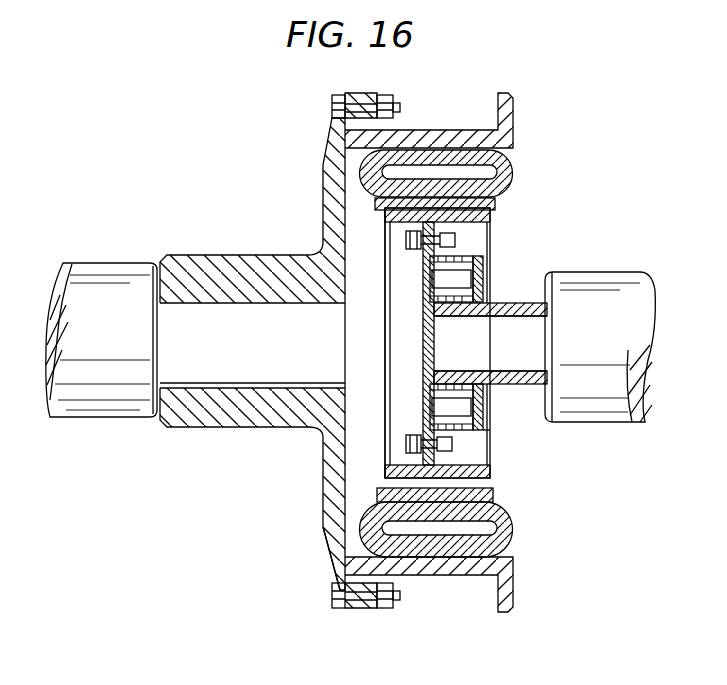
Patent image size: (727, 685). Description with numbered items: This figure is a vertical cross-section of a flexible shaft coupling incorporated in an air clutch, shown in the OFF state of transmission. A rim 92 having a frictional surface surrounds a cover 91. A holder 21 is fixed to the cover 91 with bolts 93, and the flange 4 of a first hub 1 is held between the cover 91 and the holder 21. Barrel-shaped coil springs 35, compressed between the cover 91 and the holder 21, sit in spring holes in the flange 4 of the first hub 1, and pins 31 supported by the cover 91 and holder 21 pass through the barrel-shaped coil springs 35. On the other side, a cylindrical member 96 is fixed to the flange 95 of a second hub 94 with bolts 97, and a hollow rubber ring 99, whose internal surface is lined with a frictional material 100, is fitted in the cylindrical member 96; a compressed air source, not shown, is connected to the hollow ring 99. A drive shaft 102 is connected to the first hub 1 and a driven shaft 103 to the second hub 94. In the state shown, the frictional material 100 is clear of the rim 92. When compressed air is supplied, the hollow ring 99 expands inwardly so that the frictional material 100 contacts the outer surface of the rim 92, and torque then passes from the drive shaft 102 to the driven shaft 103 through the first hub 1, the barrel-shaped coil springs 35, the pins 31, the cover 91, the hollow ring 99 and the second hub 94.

The first hub 1 is at (518, 297).
The flange of first hub 4 is at (470, 437).
The holder 21 is at (480, 254).
The pins 31 is at (484, 285).
The barrel-shaped coil springs 35 is at (456, 240).
The cover 91 is at (425, 308).
The rim 92 is at (345, 195).
The bolts 93 is at (385, 226).
The second hub 94 is at (197, 427).
The flange of second hub 95 is at (337, 549).
The cylindrical member 96 is at (443, 568).
The bolts 97 is at (383, 597).
The hollow rubber ring 99 is at (505, 540).
The frictional material 100 is at (376, 494).
The drive shaft 102 is at (619, 424).
The driven shaft 103 is at (108, 412).